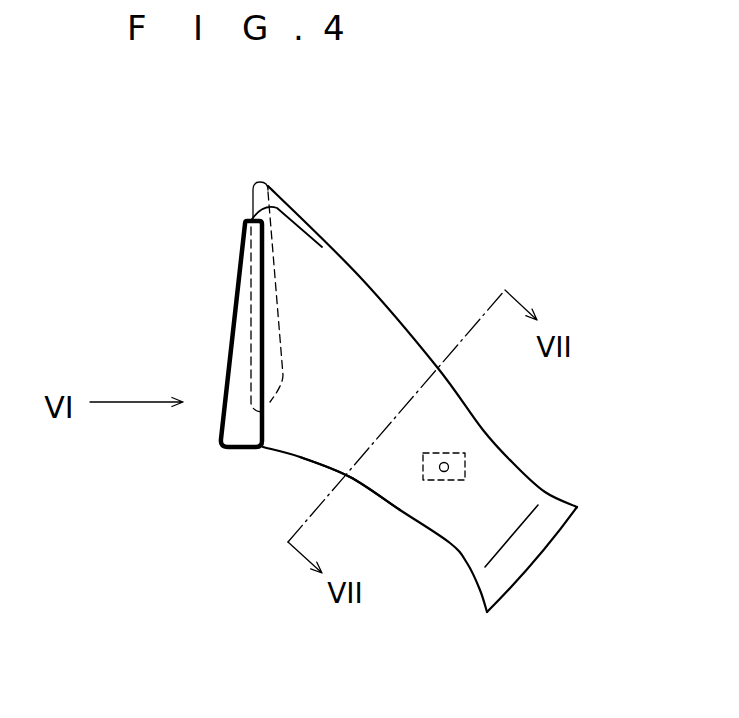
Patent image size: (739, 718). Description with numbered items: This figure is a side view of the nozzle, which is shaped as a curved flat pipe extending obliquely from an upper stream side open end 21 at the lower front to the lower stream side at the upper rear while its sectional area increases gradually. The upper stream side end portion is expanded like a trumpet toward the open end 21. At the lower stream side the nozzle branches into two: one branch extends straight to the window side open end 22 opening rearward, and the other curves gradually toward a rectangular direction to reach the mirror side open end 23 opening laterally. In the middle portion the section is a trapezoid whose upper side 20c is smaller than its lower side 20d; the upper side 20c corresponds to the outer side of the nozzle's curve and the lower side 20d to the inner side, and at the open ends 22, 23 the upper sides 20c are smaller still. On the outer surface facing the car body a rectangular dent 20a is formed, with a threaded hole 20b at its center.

The rectangular dent 20a is at (447, 453).
The threaded hole 20b is at (453, 474).
The upper side 20c is at (260, 180).
The lower side 20d is at (342, 481).
The upper stream side open end 21 is at (545, 549).
The window side open end 22 is at (253, 183).
The mirror side open end 23 is at (230, 342).